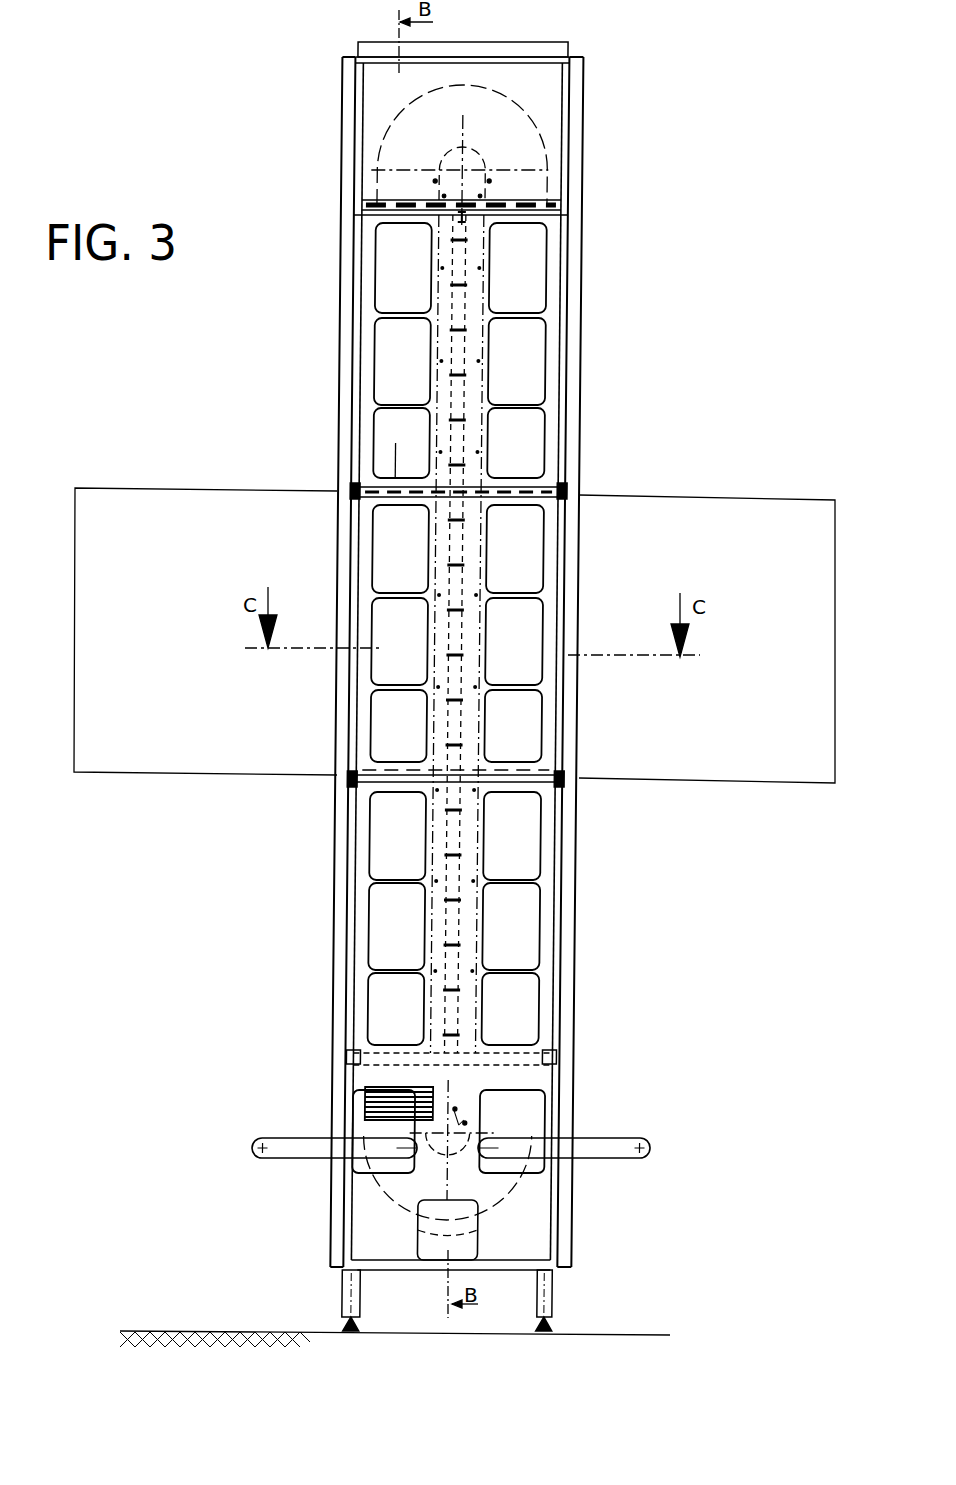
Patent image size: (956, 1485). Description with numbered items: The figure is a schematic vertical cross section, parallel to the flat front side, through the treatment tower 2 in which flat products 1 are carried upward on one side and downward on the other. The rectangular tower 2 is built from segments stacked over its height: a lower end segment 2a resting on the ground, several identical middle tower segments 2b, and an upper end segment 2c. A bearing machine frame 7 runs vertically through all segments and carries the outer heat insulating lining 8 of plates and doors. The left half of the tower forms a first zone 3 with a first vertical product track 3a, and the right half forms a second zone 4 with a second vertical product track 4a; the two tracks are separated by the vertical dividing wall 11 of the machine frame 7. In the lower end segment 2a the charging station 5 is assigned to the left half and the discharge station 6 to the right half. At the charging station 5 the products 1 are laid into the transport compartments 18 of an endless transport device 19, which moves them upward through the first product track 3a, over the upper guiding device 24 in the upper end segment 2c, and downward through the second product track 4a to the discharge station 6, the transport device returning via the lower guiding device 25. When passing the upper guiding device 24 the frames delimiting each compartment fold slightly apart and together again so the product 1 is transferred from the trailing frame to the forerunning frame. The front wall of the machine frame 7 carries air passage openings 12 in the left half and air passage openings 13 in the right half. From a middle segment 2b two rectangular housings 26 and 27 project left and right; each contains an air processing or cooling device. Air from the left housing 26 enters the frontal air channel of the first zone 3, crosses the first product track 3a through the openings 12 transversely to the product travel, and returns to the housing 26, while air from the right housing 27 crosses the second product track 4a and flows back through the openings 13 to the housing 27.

The products 1 is at (365, 1110).
The tower 2 is at (600, 35).
The lower end segment 2a is at (577, 1255).
The middle tower segments 2b is at (582, 397).
The upper end segment 2c is at (588, 112).
The first zone 3 is at (356, 803).
The first vertical product track 3a is at (367, 249).
The second zone 4 is at (557, 805).
The second vertical product track 4a is at (553, 237).
The charging station 5 is at (305, 1183).
The discharge station 6 is at (597, 1186).
The machine frame 7 is at (552, 1305).
The heat insulating lining 8 is at (343, 450).
The vertical dividing wall 11 is at (458, 268).
The air passage openings 12 is at (383, 440).
The air passage openings 13 is at (531, 445).
The transport compartments 18 is at (367, 1086).
The endless transport device 19 is at (472, 1088).
The upper guiding device 24 is at (473, 162).
The lower guiding device 25 is at (452, 1160).
The left housing 26 is at (128, 489).
The right housing 27 is at (777, 497).